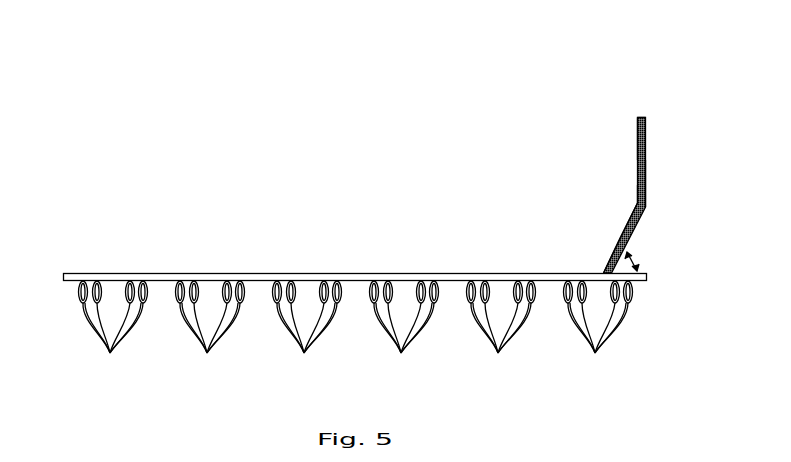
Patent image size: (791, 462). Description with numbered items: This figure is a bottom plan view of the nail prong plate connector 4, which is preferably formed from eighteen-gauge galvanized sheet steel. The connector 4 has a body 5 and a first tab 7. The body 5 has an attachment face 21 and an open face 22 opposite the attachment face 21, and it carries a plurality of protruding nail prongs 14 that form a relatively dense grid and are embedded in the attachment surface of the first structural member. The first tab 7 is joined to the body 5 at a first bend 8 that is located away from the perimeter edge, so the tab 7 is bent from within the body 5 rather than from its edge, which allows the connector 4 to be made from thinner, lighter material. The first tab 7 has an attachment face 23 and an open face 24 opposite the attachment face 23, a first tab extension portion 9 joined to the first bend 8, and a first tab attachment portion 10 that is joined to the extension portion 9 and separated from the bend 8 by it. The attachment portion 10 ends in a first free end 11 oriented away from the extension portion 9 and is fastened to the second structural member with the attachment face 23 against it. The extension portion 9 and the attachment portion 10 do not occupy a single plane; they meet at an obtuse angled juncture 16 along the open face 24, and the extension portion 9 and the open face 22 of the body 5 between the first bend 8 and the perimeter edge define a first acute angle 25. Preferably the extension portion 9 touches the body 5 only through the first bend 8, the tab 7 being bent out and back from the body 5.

The connector 4 is at (84, 269).
The body 5 is at (117, 269).
The open face 22 is at (307, 273).
The attachment face 21 is at (260, 282).
The nail prongs 14 is at (339, 278).
The first tab 7 is at (651, 138).
The first free end 11 is at (641, 117).
The first tab attachment portion 10 is at (637, 125).
The open face 24 is at (636, 147).
The obtuse angled juncture 16 is at (636, 207).
The first tab extension portion 9 is at (623, 236).
The first bend 8 is at (603, 270).
The attachment face 23 is at (647, 185).
The first acute angle 25 is at (639, 259).